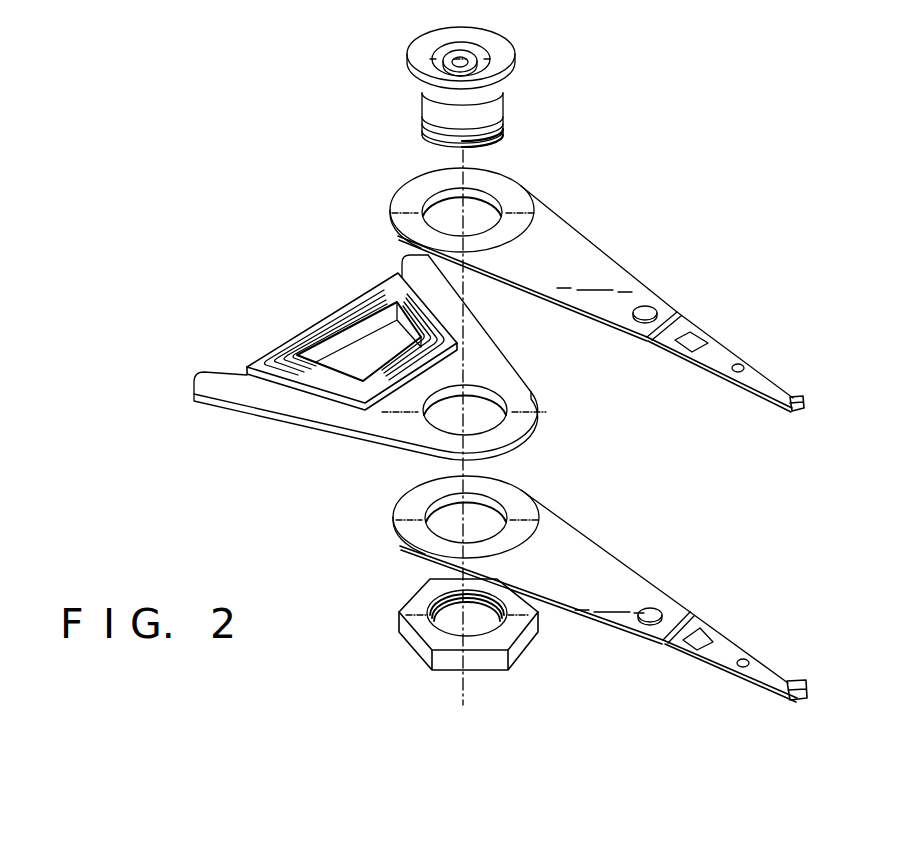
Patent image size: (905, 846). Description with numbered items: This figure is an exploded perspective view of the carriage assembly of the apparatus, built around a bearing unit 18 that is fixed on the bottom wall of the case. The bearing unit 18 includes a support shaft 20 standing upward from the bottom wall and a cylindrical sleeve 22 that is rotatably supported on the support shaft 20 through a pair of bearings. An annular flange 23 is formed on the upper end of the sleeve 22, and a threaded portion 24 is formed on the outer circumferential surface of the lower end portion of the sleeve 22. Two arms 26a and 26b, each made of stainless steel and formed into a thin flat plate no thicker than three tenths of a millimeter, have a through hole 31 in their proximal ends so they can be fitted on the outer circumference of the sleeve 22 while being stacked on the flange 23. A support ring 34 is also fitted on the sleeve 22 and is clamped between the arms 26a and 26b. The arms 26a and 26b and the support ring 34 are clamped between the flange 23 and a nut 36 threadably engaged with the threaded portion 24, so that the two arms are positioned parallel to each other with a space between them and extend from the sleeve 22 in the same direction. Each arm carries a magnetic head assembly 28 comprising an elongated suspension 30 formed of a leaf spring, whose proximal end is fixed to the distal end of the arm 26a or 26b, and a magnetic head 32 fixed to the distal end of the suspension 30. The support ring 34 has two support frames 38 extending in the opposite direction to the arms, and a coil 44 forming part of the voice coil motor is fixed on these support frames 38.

The bearing unit 18 is at (542, 85).
The support shaft 20 is at (484, 56).
The cylindrical sleeve 22 is at (430, 105).
The annular flange 23 is at (415, 53).
The threaded portion 24 is at (503, 127).
The arm 26a is at (610, 280).
The arm 26b is at (617, 582).
The magnetic head assembly 28 is at (749, 359).
The suspension 30 is at (717, 350).
The through hole 31 is at (488, 210).
The magnetic head 32 is at (777, 407).
The support ring 34 is at (523, 417).
The nut 36 is at (405, 632).
The support frame 38 is at (273, 402).
The coil 44 is at (307, 337).